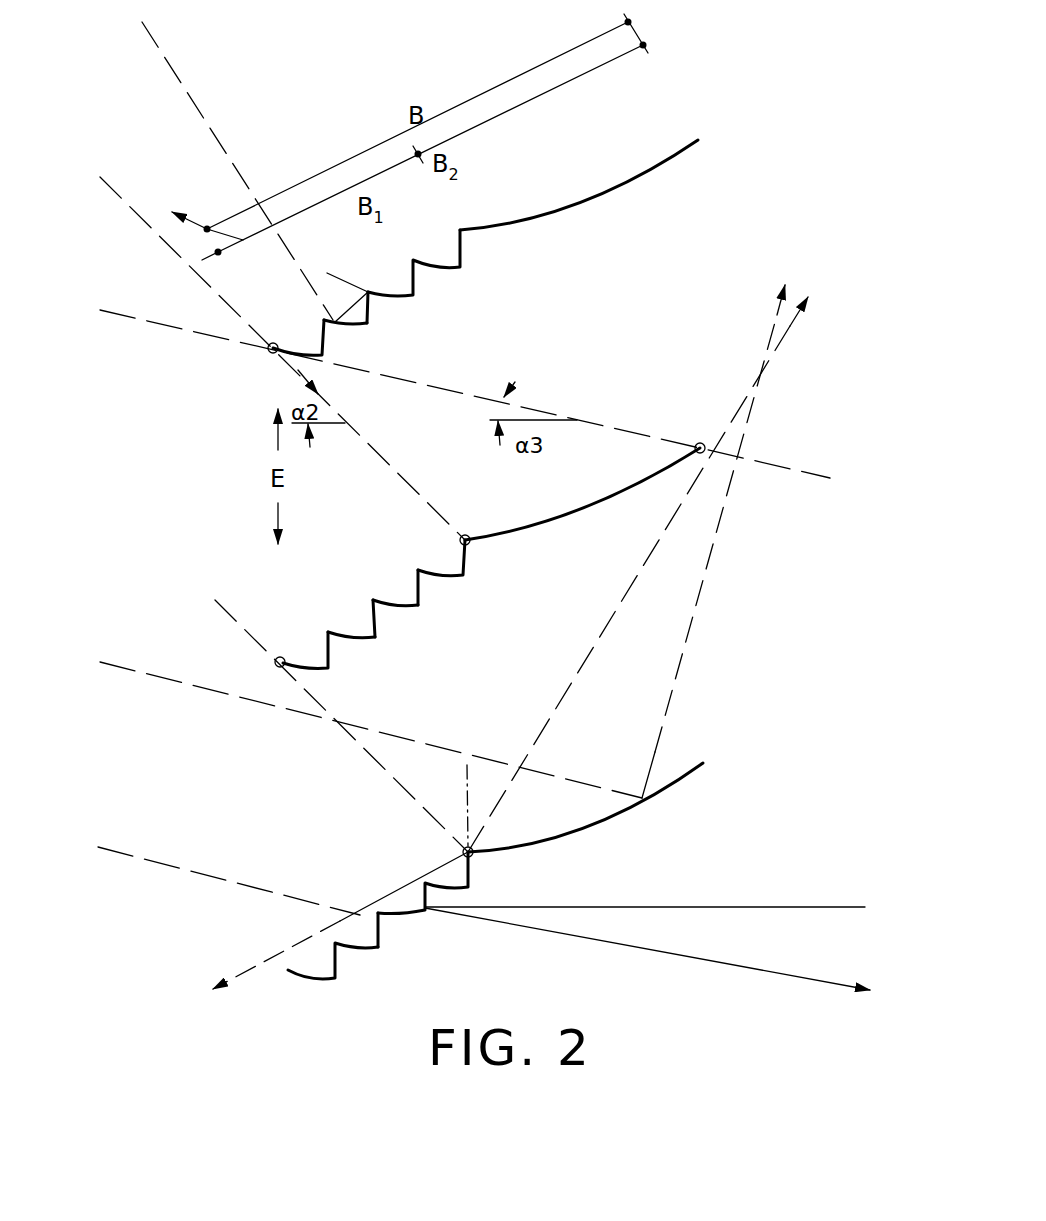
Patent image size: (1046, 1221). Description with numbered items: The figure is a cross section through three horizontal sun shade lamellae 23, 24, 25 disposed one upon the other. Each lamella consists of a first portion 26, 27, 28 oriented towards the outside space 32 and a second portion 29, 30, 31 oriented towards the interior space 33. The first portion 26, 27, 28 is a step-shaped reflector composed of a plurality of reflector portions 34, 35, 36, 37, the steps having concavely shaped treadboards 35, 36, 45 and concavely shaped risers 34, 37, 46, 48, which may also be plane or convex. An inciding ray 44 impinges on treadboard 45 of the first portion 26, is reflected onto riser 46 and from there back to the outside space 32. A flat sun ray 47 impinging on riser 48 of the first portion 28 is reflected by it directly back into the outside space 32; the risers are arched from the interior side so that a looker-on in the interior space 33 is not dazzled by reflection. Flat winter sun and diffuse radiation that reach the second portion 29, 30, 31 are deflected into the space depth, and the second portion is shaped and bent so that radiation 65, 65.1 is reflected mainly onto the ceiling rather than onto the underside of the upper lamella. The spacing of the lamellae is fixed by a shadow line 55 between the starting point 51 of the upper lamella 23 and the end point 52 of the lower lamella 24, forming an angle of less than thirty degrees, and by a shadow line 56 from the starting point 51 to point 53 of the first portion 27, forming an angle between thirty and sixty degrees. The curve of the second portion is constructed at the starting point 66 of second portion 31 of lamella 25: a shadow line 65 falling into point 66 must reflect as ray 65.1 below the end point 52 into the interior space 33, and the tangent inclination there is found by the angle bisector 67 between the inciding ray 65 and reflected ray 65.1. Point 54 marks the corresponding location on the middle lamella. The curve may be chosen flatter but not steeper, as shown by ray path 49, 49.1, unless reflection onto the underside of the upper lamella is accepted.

The sun shade lamella 23 is at (716, 223).
The sun shade lamella 24 is at (722, 588).
The sun shade lamella 25 is at (722, 860).
The first portion 26 is at (392, 300).
The first portion 27 is at (405, 613).
The first portion 28 is at (405, 919).
The second portion 29 is at (557, 224).
The second portion 30 is at (559, 536).
The second portion 31 is at (557, 845).
The outside space 32 is at (160, 563).
The interior space 33 is at (860, 535).
The riser 34 is at (420, 598).
The treadboard 35 is at (400, 610).
The treadboard 36 is at (355, 637).
The riser 37 is at (376, 625).
The inciding ray 44 is at (213, 125).
The treadboard 45 is at (345, 325).
The riser 46 is at (370, 300).
The flat sun ray 47 is at (198, 872).
The riser 48 is at (380, 925).
The ray path 49 is at (452, 752).
The reflected ray 49.1 is at (665, 708).
The starting point 51 is at (268, 353).
The end point 52 is at (700, 443).
The starting point 53 is at (468, 545).
The reference point 54 is at (275, 667).
The shadow line 55 is at (423, 380).
The shadow line 56 is at (428, 500).
The shadow line 65 is at (392, 768).
The reflected ray 65.1 is at (556, 712).
The starting point 66 is at (473, 856).
The angle bisector 67 is at (462, 820).